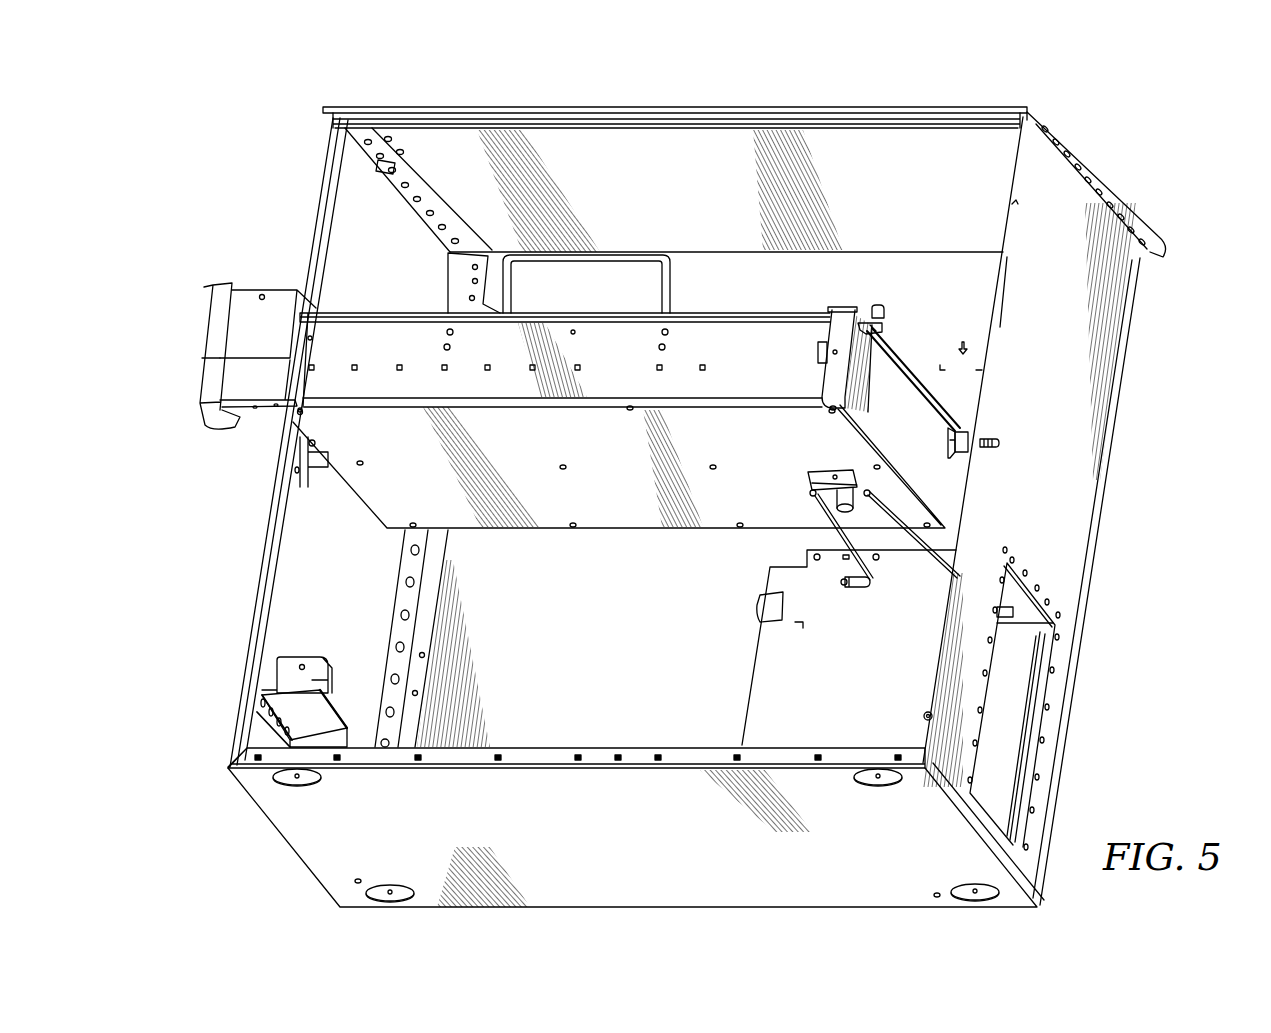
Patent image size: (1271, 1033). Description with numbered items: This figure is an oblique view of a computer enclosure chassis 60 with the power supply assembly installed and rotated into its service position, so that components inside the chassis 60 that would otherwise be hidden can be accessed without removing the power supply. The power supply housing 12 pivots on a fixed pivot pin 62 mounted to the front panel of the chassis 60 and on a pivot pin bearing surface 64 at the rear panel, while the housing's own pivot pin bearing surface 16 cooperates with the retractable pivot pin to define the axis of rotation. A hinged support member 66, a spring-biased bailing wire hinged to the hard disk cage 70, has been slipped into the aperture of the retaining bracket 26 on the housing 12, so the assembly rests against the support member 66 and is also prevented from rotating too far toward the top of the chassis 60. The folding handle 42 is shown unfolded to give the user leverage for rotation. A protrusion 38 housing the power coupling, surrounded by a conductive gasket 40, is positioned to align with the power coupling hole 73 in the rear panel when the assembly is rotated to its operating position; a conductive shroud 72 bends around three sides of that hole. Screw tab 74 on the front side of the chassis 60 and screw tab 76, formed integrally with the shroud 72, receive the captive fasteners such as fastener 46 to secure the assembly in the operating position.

The housing 12 is at (752, 311).
The pivot pin bearing surface 16 is at (948, 440).
The retaining bracket 26 is at (810, 486).
The protrusion 38 is at (262, 290).
The conductive gasket 40 is at (210, 322).
The folding handle 42 is at (670, 290).
The fastener 46 is at (878, 307).
The computer enclosure chassis 60 is at (680, 106).
The fixed pivot pin 62 is at (960, 431).
The pivot pin bearing surface 64 is at (306, 470).
The hinged support member 66 is at (940, 572).
The hard disk cage 70 is at (762, 667).
The conductive shroud 72 is at (340, 716).
The power coupling hole 73 is at (252, 716).
The screw tab 74 is at (925, 712).
The screw tab 76 is at (290, 657).